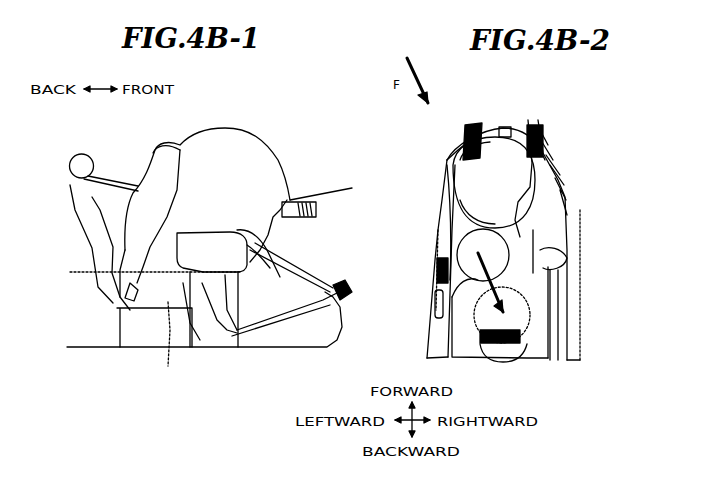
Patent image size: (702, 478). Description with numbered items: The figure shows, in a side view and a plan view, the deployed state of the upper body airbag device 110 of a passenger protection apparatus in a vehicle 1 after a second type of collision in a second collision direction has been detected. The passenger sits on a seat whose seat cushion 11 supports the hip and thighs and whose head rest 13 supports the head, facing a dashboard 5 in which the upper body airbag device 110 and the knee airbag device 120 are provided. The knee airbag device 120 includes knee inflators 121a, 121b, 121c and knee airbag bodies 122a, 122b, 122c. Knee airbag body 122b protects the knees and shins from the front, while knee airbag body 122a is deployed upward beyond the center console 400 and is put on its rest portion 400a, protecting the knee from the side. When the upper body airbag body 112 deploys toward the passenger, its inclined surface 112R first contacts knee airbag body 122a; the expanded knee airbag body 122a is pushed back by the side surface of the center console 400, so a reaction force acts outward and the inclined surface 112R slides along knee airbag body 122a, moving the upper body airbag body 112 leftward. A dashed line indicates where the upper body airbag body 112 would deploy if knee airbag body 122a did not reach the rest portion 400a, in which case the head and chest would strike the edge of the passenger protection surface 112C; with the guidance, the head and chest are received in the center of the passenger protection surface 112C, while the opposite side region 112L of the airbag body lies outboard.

In FIG. 4B-2, the vehicle 1 is at (433, 310).
In FIG. 4B-1, the dashboard 5 is at (336, 191).
In FIG. 4B-1, the seat cushion 11 is at (168, 345).
In FIG. 4B-2, the seat cushion 11 is at (446, 345).
In FIG. 4B-1, the head rest 13 is at (82, 153).
In FIG. 4B-2, the head rest 13 is at (503, 364).
In FIG. 4B-1, the upper body airbag device 110 is at (298, 222).
In FIG. 4B-1, the upper body airbag body 112 is at (222, 130).
In FIG. 4B-2, the upper body airbag body 112 is at (440, 170).
In FIG. 4B-2, the left side portion of seat back 112L is at (440, 188).
In FIG. 4B-2, the inclined surface 112R is at (565, 205).
In FIG. 4B-2, the passenger protection surface 112C is at (440, 228).
In FIG. 4B-1, the knee airbag device 120 is at (341, 283).
In FIG. 4B-2, the knee inflator 121a is at (538, 124).
In FIG. 4B-2, the knee inflator 121b is at (505, 127).
In FIG. 4B-2, the knee inflator 121c is at (470, 124).
In FIG. 4B-1, the knee airbag body 122a is at (197, 233).
In FIG. 4B-2, the knee airbag body 122a is at (548, 250).
In FIG. 4B-1, the knee airbag body 122b is at (248, 232).
In FIG. 4B-2, the knee airbag body 122b is at (450, 215).
In FIG. 4B-2, the knee airbag body 122c is at (445, 148).
In FIG. 4B-2, the center console 400 is at (587, 343).
In FIG. 4B-1, the rest portion 400a is at (75, 270).
In FIG. 4B-2, the rest portion 400a is at (580, 328).